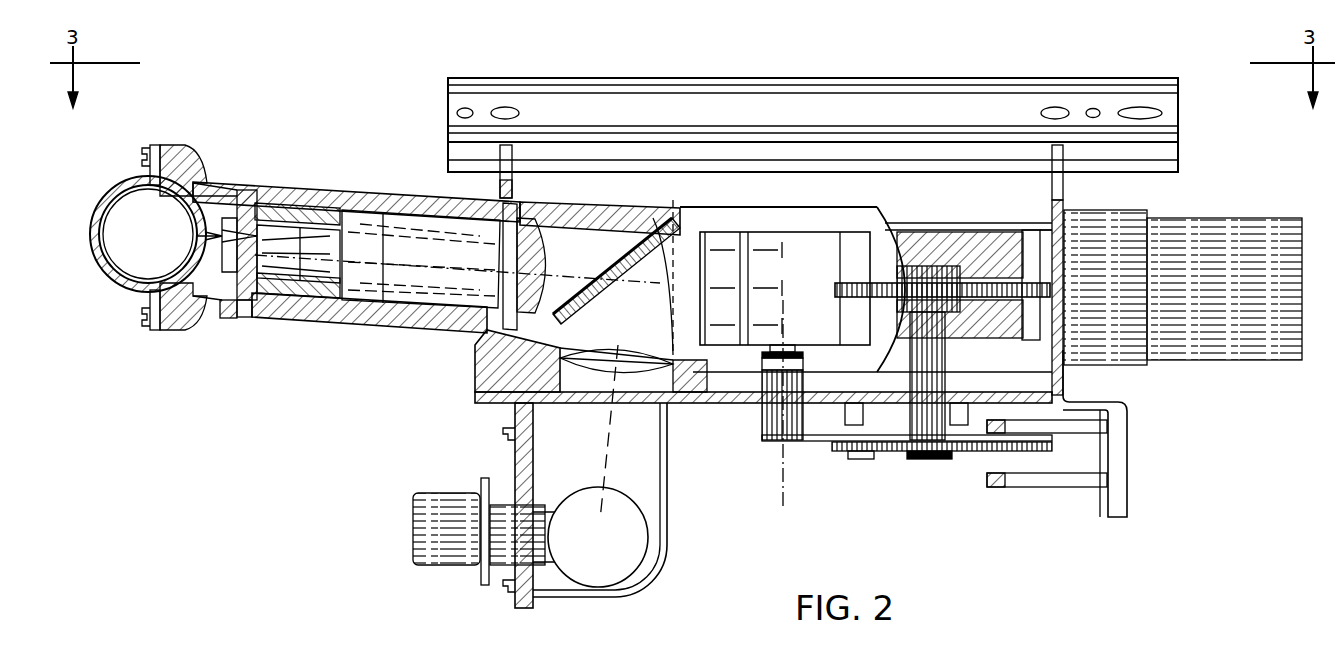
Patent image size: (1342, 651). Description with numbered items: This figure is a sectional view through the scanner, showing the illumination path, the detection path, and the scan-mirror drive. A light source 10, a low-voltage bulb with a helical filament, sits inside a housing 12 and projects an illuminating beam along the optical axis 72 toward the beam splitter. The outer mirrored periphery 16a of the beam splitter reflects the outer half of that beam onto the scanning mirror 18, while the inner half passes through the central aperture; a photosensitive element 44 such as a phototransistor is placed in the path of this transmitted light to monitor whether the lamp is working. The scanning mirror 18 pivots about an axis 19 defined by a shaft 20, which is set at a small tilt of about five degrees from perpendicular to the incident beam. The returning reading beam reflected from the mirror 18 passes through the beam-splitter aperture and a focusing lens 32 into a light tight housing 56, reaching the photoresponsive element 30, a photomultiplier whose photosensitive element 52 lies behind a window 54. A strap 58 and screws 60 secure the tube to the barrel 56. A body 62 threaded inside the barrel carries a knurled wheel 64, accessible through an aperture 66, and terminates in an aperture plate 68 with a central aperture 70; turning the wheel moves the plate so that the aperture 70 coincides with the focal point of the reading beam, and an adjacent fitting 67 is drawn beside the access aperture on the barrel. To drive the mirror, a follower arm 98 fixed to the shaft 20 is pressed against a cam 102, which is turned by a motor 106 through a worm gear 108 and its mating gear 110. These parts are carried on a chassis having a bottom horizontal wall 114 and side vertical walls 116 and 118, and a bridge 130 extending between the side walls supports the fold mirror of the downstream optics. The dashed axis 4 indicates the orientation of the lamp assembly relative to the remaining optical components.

The optical axis of lamp 4 is at (628, 408).
The light source 10 is at (590, 537).
The housing 12 is at (655, 572).
The outer mirrored periphery 16a is at (682, 215).
The scanning mirror 18 is at (725, 237).
The axis 19 is at (786, 492).
The shaft 20 is at (762, 424).
The photoresponsive element 30 is at (148, 236).
The focusing lens 32 is at (549, 243).
The photosensitive element 44 is at (636, 228).
The photosensitive element 52 is at (196, 232).
The window 54 is at (226, 230).
The light tight housing 56 is at (346, 188).
The strap 58 is at (112, 192).
The screws 60 is at (148, 148).
The body 62 is at (290, 292).
The knurled wheel 64 is at (248, 200).
The aperture 66 is at (233, 322).
The lock nut 67 is at (245, 320).
The aperture plate 68 is at (218, 272).
The aperture 70 is at (442, 256).
The optical axis 72 is at (622, 338).
The follower arm 98 is at (816, 436).
The cam 102 is at (958, 456).
The motor 106 is at (1185, 352).
The worm gear 108 is at (925, 270).
The mating gear 110 is at (838, 288).
The bottom horizontal wall 114 is at (692, 405).
The side vertical wall 116 is at (1063, 205).
The side vertical wall 118 is at (512, 190).
The bridge 130 is at (1040, 240).